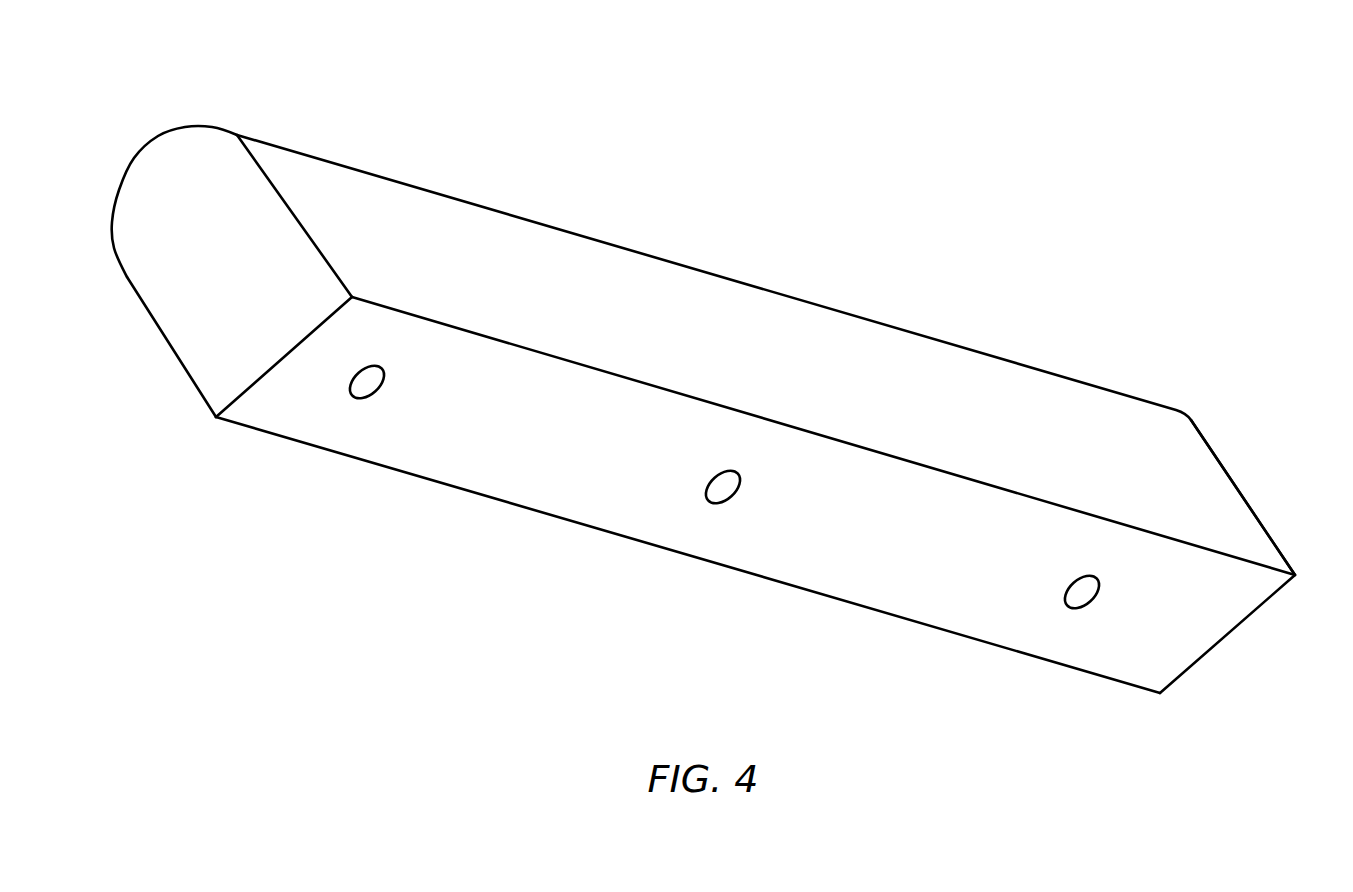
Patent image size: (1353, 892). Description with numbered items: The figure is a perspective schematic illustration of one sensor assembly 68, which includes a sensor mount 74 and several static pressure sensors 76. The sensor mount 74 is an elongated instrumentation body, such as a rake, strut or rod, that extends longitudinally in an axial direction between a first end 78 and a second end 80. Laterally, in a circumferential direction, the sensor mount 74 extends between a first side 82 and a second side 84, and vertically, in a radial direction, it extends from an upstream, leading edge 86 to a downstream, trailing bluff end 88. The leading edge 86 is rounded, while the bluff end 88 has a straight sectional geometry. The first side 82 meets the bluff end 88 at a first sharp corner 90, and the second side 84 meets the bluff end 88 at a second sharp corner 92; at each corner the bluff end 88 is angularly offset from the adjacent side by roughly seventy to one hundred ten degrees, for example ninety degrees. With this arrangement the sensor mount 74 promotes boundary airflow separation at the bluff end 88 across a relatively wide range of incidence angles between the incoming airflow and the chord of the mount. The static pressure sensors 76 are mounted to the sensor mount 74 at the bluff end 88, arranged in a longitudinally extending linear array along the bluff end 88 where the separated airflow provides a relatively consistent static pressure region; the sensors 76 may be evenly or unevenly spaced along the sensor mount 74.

The sensor assembly 68 is at (996, 185).
The sensor mount 74 is at (593, 232).
The static pressure sensors 76 is at (346, 403).
The first end 78 is at (162, 277).
The second end 80 is at (1245, 488).
The first side 82 is at (182, 368).
The second side 84 is at (293, 207).
The leading edge 86 is at (157, 145).
The trailing bluff end 88 is at (255, 412).
The first corner 90 is at (418, 477).
The second corner 92 is at (470, 332).